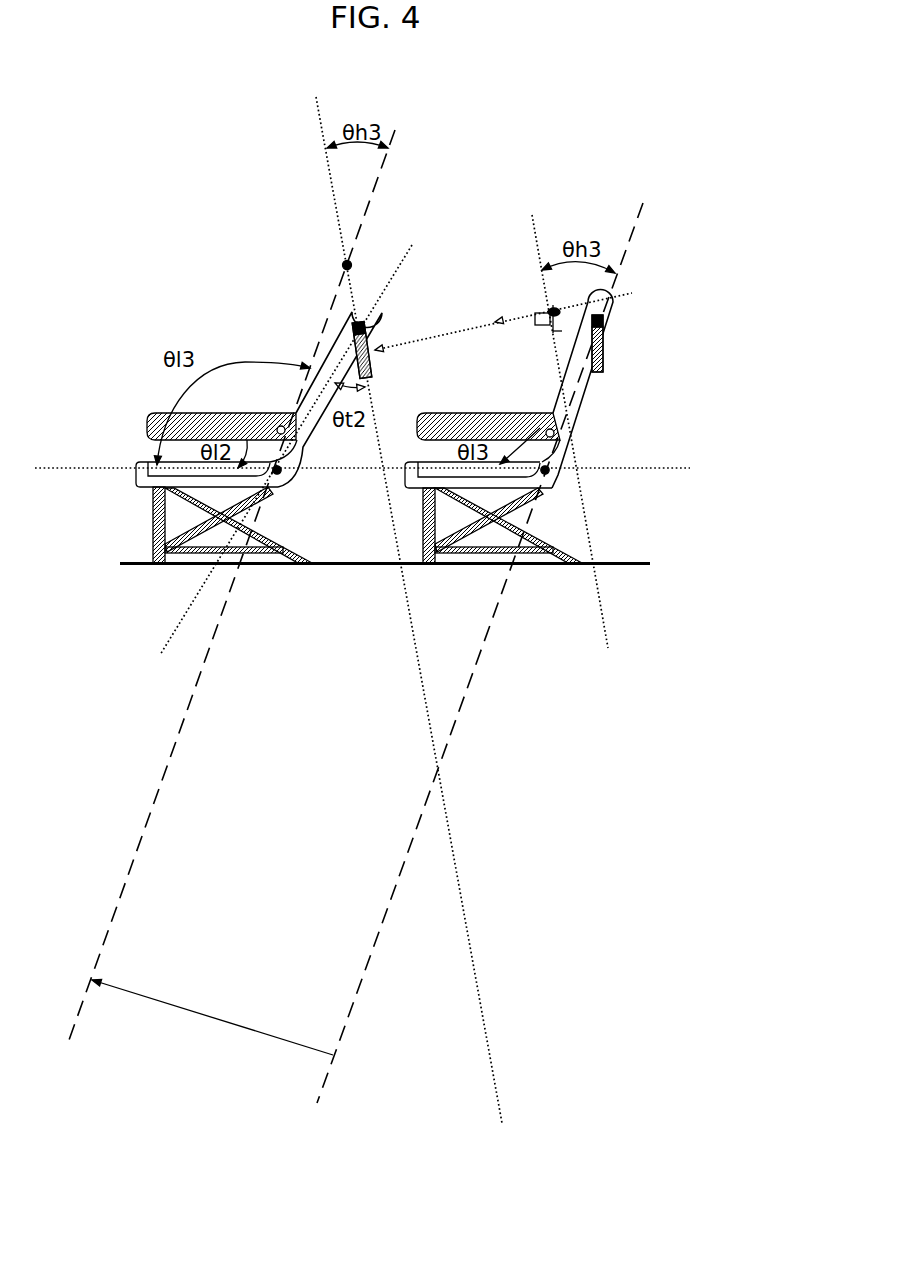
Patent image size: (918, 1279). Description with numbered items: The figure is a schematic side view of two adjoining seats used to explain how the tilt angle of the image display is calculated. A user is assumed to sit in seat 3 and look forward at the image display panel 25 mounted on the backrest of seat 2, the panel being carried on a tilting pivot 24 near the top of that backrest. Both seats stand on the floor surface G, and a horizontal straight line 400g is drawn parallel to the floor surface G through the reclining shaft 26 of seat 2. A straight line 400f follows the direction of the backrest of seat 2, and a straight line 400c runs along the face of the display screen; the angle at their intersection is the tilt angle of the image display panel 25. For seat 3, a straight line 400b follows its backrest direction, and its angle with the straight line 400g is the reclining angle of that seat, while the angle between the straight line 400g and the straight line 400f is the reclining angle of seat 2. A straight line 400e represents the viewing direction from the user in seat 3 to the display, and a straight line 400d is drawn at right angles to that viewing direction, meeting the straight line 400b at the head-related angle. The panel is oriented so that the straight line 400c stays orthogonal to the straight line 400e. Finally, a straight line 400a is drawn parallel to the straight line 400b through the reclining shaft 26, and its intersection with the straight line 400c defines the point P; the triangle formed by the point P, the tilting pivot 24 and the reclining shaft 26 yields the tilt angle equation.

The seat 2 is at (295, 408).
The seat 3 is at (611, 328).
The tilting pivot 24 is at (398, 331).
The image display panel 25 is at (366, 322).
The reclining shaft 26 is at (280, 474).
The intersection point P is at (334, 266).
The floor surface G is at (363, 565).
The straight line 400a is at (249, 569).
The straight line 400b is at (495, 640).
The straight line 400c is at (397, 598).
The straight line 400d is at (557, 419).
The straight line 400e is at (532, 318).
The straight line 400f is at (299, 439).
The straight line 400g is at (392, 470).